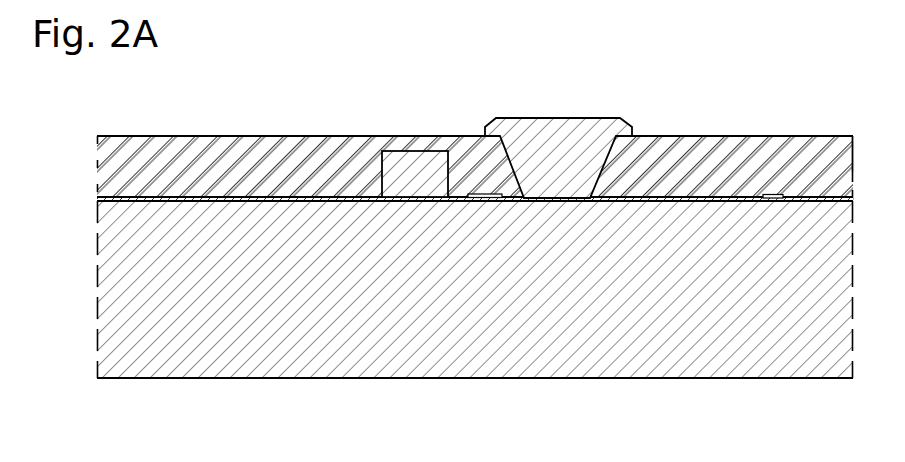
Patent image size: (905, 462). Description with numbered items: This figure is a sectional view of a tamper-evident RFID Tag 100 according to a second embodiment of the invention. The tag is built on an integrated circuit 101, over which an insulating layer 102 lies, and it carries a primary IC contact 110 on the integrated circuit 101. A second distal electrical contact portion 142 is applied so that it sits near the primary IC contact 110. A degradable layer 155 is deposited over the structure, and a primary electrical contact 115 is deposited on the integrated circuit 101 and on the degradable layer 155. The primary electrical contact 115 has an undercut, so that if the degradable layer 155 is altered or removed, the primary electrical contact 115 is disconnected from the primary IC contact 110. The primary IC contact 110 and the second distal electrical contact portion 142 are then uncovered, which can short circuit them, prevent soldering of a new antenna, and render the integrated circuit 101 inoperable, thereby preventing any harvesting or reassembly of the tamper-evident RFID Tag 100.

The tamper-evident RFID Tag 100 is at (713, 47).
The integrated circuit 101 is at (718, 276).
The insulating layer 102 is at (98, 198).
The primary IC contact 110 is at (513, 201).
The primary electrical contact 115 is at (565, 152).
The second distal electrical contact portion 142 is at (415, 165).
The degradable layer 155 is at (813, 157).